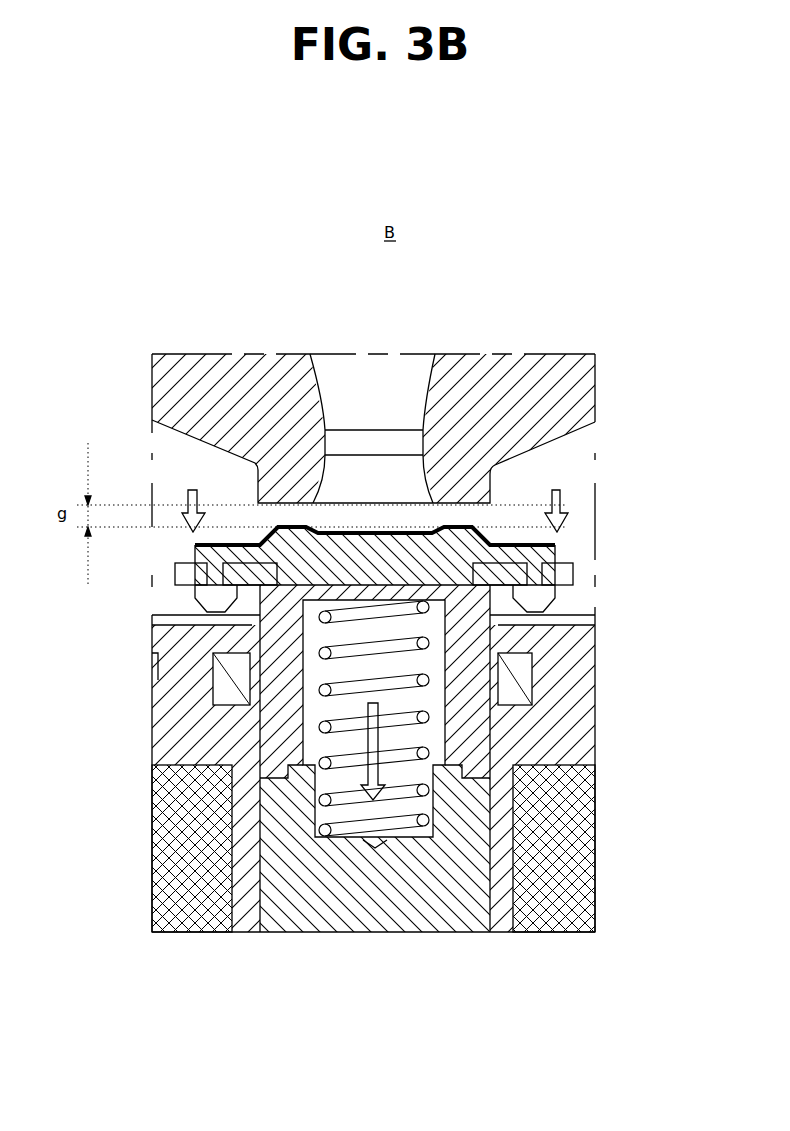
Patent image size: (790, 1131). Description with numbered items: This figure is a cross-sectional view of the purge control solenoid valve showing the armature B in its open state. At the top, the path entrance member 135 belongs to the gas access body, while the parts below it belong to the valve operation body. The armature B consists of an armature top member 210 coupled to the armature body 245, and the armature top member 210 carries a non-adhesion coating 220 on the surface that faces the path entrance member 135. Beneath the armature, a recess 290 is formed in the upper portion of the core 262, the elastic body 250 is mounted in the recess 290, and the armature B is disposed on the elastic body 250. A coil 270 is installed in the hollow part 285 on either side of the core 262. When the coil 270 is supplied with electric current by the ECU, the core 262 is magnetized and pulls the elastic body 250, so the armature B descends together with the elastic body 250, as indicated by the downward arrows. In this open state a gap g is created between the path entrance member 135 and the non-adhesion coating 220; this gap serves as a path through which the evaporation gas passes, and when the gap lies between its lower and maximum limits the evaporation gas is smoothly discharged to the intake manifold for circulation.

The path entrance member 135 is at (305, 492).
The armature top member 210 is at (470, 527).
The non-adhesion coating 220 is at (530, 548).
The armature body 245 is at (445, 735).
The elastic body 250 is at (325, 703).
The core 262 is at (555, 850).
The coil 270 is at (597, 808).
The hollow part 285 is at (240, 840).
The recess 290 is at (348, 858).